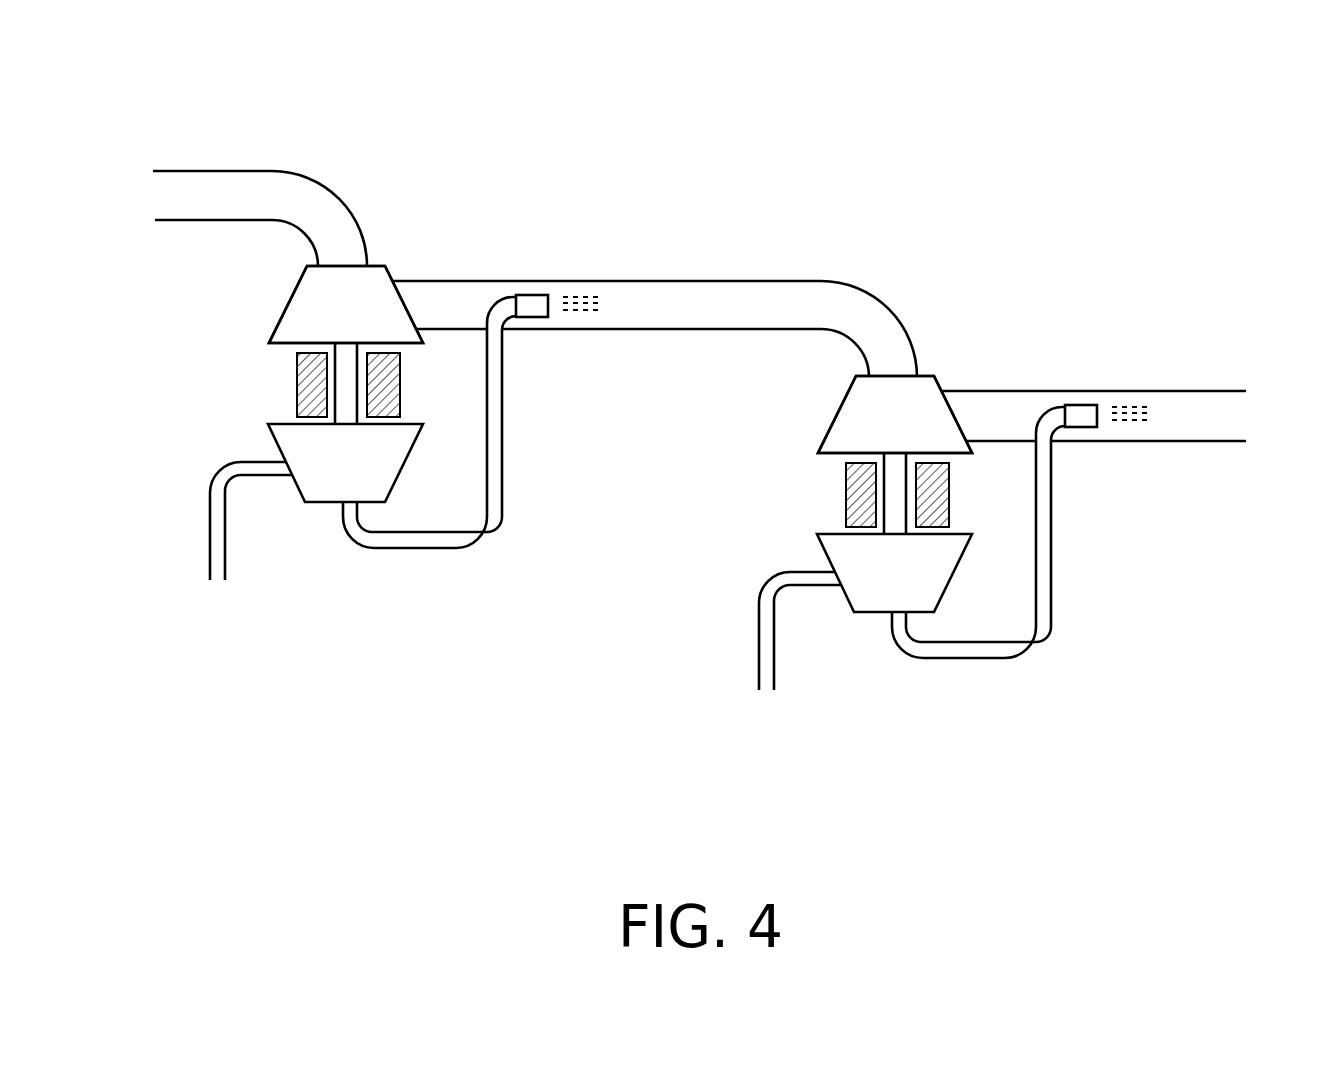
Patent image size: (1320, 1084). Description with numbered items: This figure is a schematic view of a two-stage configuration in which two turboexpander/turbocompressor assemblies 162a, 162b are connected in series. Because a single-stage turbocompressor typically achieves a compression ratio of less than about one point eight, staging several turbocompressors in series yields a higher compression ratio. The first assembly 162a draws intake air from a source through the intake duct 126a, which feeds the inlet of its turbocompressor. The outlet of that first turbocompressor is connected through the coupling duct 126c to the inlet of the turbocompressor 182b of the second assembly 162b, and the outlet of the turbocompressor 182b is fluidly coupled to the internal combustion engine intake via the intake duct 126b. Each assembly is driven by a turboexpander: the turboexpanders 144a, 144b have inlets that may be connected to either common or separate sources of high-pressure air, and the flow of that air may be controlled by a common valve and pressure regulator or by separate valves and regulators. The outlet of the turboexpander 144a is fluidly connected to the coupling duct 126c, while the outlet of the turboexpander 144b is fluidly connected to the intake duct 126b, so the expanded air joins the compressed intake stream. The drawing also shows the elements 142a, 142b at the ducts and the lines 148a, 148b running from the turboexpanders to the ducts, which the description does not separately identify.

The intake duct 126a is at (182, 169).
The intake duct 126b is at (1187, 391).
The coupling duct 126c is at (712, 281).
The first nozzle 142a is at (532, 295).
The second nozzle 142b is at (1082, 405).
The turboexpander 144a is at (327, 505).
The turboexpander 144b is at (867, 613).
The first recirculation line 148a is at (502, 452).
The second recirculation line 148b is at (1052, 562).
The turboexpander/turbocompressor assembly 162a is at (286, 309).
The turboexpander/turbocompressor assembly 162b is at (835, 422).
The turbocompressor 182b is at (383, 262).